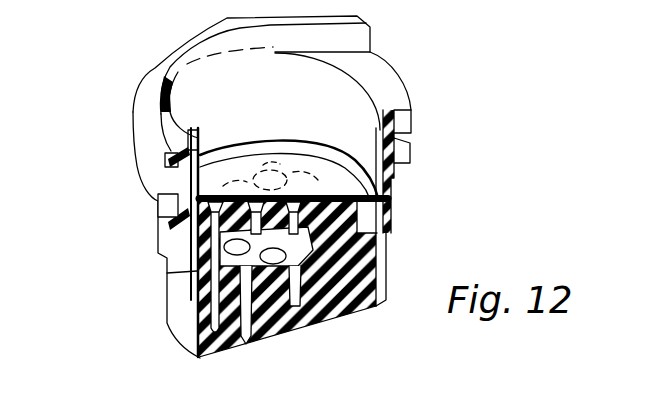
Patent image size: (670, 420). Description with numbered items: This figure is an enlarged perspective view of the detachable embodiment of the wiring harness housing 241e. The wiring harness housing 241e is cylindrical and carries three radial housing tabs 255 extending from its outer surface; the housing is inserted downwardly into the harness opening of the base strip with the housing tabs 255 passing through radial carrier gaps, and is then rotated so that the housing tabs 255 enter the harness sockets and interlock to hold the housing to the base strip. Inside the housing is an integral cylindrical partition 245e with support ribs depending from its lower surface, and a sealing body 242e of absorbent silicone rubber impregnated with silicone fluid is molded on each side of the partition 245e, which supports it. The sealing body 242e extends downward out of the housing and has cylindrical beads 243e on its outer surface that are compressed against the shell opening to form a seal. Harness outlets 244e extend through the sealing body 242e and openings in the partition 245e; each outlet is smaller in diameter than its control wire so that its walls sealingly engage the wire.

The housing tabs 255 is at (160, 206).
The wiring harness housing 241e is at (387, 186).
The cylindrical beads 243e is at (383, 302).
The sealing body 242e is at (325, 333).
The harness outlets 244e is at (168, 282).
The partition 245e is at (251, 334).